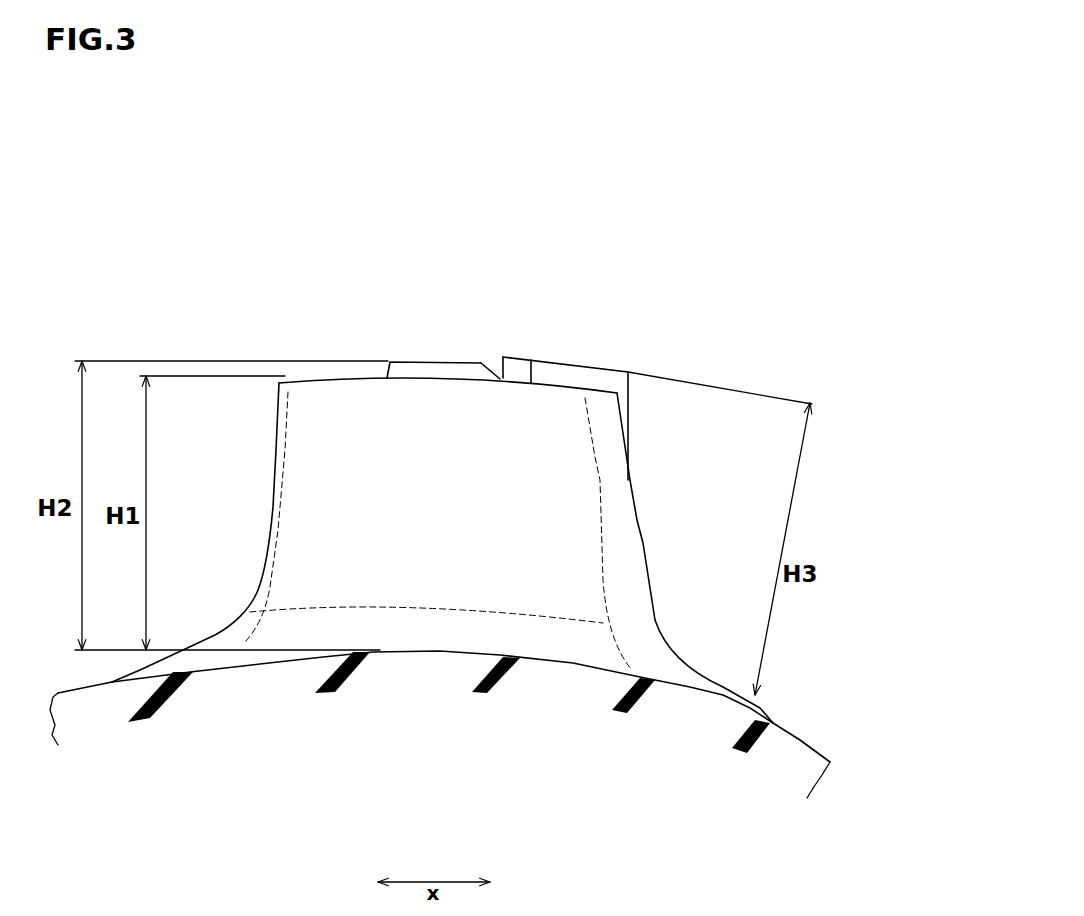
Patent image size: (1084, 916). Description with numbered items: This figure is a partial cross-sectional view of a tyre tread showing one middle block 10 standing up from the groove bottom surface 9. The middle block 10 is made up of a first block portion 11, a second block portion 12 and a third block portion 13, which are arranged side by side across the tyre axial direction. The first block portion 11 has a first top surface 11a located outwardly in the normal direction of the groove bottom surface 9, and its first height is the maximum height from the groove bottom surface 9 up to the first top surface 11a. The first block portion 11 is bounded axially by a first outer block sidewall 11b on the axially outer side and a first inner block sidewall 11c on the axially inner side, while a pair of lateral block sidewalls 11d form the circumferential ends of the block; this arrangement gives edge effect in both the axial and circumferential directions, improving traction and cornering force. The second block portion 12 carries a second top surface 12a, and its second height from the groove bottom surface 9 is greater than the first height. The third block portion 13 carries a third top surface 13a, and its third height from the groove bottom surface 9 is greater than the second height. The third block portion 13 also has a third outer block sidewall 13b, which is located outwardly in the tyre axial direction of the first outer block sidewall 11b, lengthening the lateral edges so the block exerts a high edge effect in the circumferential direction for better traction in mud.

The middle block 10 is at (607, 210).
The groove bottom surface 9 is at (577, 662).
The first block portion 11 is at (543, 491).
The first top surface 11a is at (312, 380).
The first outer block sidewall 11b is at (645, 543).
The first inner block sidewall 11c is at (273, 507).
The lateral block sidewall 11d is at (433, 522).
The second block portion 12 is at (413, 370).
The second top surface 12a is at (450, 360).
The third block portion 13 is at (562, 373).
The third top surface 13a is at (595, 362).
The third outer block sidewall 13b is at (632, 410).